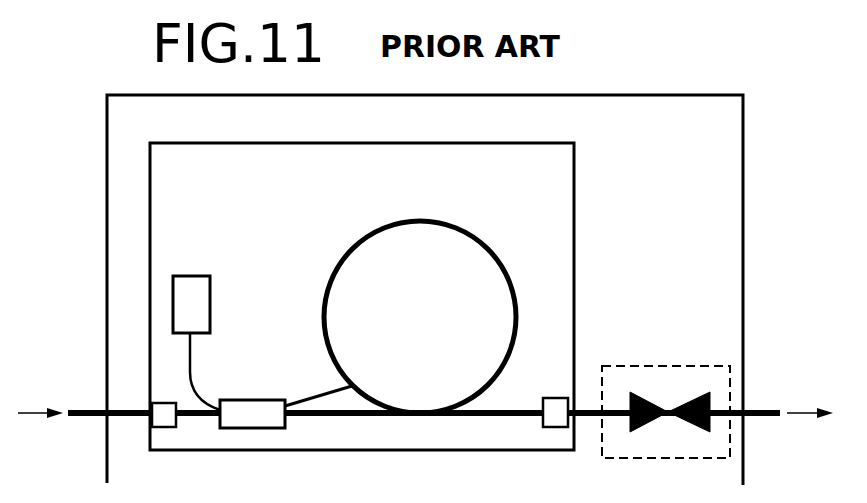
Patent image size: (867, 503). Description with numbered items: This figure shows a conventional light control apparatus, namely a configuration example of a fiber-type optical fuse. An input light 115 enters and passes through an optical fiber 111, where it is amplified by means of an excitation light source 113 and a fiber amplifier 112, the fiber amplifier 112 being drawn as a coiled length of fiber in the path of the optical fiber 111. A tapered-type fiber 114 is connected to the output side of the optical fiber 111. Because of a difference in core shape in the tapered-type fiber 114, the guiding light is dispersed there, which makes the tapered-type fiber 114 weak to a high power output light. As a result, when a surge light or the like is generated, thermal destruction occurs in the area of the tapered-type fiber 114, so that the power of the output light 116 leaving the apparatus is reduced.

The optical fiber 111 is at (88, 411).
The fiber amplifier 112 is at (483, 242).
The excitation light source 113 is at (205, 276).
The tapered-type fiber 114 is at (681, 366).
The input light 115 is at (34, 420).
The output light 116 is at (800, 416).